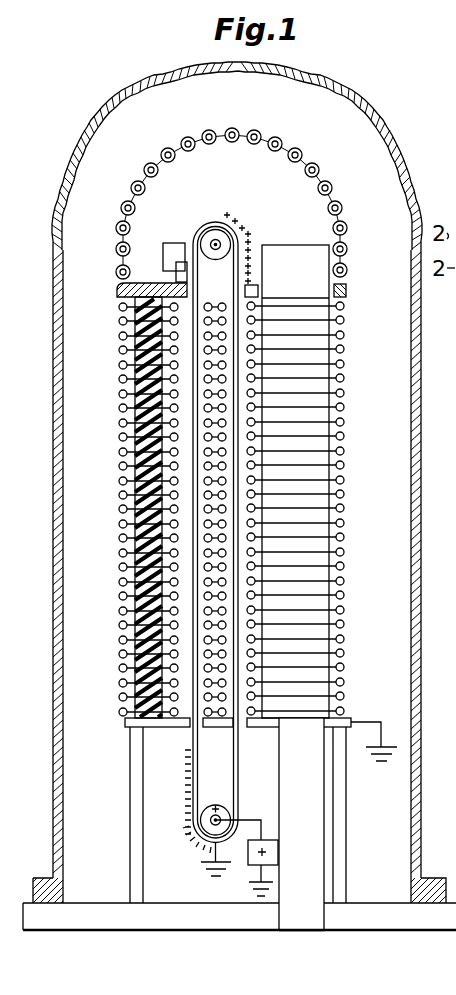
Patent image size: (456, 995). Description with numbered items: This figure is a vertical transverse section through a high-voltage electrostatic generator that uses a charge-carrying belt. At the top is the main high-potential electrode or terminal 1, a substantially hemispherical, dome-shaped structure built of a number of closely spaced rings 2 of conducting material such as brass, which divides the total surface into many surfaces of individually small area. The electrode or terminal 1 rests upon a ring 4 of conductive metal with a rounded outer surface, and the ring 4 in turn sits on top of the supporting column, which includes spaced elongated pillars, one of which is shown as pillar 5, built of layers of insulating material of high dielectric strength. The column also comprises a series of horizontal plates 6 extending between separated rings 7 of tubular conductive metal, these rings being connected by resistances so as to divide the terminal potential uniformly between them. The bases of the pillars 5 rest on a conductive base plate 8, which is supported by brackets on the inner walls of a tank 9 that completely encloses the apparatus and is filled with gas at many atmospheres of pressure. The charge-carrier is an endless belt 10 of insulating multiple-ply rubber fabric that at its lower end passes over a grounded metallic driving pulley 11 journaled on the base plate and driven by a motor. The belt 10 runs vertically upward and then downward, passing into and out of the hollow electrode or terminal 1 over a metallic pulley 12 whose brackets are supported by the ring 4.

The high-potential electrode or terminal 1 is at (328, 163).
The conducting rings 2 is at (115, 228).
The ring of conductive metal 4 is at (347, 297).
The pillar 5 is at (148, 586).
The horizontal plates 6 is at (134, 383).
The separated rings 7 is at (120, 479).
The base plate 8 is at (169, 729).
The tank 9 is at (53, 543).
The endless belt 10 is at (190, 741).
The driving pulley 11 is at (216, 806).
The pulley 12 is at (215, 244).